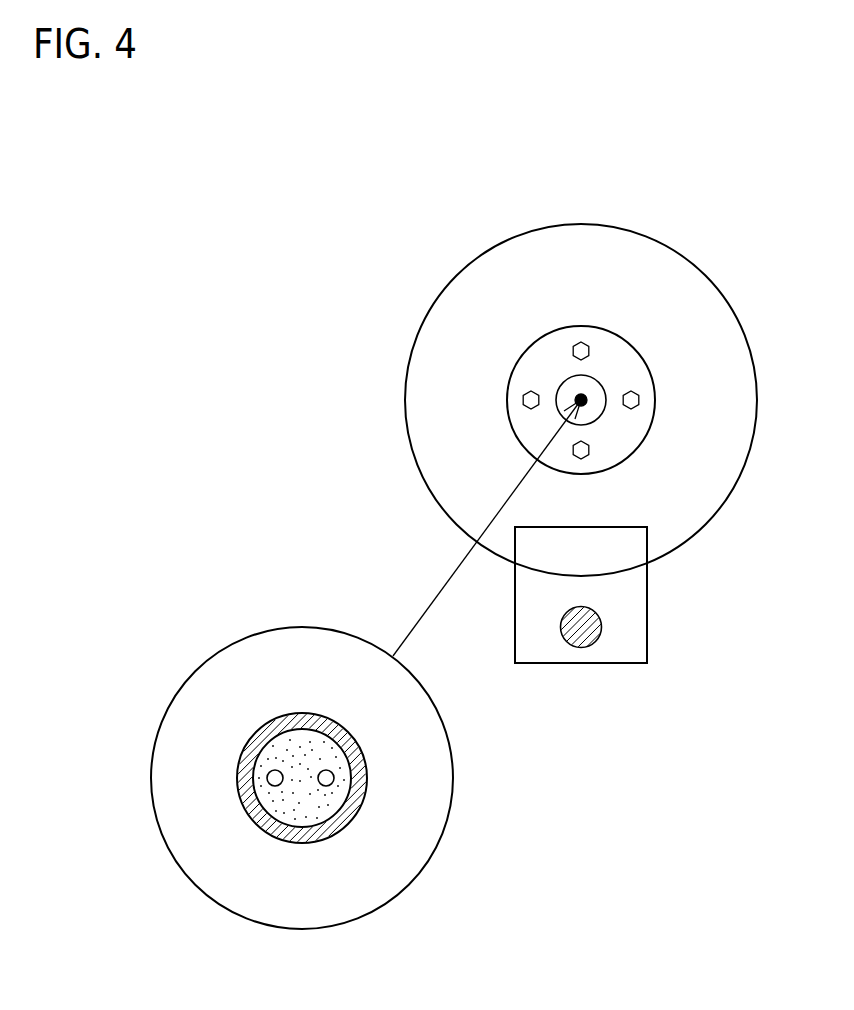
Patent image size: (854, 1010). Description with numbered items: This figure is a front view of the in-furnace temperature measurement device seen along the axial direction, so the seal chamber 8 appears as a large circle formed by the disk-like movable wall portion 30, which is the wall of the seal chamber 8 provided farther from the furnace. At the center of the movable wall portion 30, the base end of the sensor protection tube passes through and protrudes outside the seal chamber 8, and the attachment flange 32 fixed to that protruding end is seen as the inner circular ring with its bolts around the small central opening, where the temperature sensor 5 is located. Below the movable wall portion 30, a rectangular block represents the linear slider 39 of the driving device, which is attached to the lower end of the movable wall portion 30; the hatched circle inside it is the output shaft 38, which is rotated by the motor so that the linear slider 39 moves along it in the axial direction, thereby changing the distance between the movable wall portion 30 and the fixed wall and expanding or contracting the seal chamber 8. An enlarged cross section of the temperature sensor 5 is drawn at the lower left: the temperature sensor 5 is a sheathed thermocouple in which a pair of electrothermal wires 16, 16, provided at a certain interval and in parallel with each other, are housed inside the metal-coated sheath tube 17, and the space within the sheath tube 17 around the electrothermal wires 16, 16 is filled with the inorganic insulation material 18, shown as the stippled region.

The seal chamber 8 is at (663, 238).
The movable wall portion 30 is at (700, 287).
The attachment flange 32 is at (628, 443).
The temperature sensor 5 is at (581, 400).
The linear slider 39 is at (635, 598).
The output shaft 38 is at (588, 633).
The sheath tube 17 is at (353, 801).
The inorganic insulation material 18 is at (287, 742).
The electrothermal wires 16 is at (326, 786).